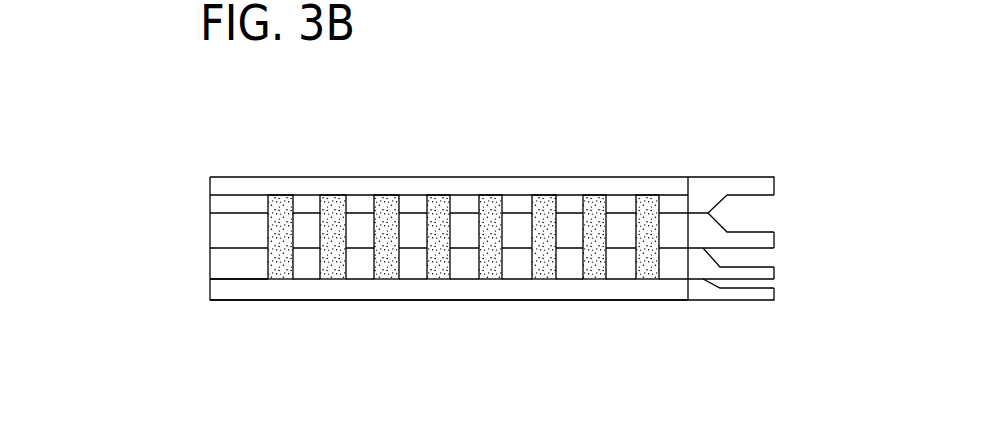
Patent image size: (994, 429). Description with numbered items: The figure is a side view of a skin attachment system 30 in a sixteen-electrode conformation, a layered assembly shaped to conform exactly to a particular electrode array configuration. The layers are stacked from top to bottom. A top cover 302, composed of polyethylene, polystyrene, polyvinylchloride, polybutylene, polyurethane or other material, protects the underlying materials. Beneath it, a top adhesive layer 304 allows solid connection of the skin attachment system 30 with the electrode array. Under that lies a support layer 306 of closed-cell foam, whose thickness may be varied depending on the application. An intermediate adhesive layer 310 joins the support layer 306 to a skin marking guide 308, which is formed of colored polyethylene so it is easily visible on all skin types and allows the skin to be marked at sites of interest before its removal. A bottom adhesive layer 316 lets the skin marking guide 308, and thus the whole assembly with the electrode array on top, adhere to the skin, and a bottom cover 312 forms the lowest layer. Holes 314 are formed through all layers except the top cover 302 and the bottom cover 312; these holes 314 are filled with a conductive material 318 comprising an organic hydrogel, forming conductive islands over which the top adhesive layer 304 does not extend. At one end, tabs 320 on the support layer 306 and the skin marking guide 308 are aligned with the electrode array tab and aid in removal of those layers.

The skin attachment system 30 is at (464, 260).
The top cover 302 is at (210, 179).
The top adhesive layer 304 is at (210, 213).
The support layer 306 is at (210, 228).
The skin marking guide 308 is at (210, 265).
The intermediate adhesive layer 310 is at (210, 250).
The bottom cover 312 is at (210, 295).
The holes 314 is at (334, 196).
The bottom adhesive layer 316 is at (210, 280).
The conductive material 318 is at (400, 225).
The tabs 320 is at (775, 272).